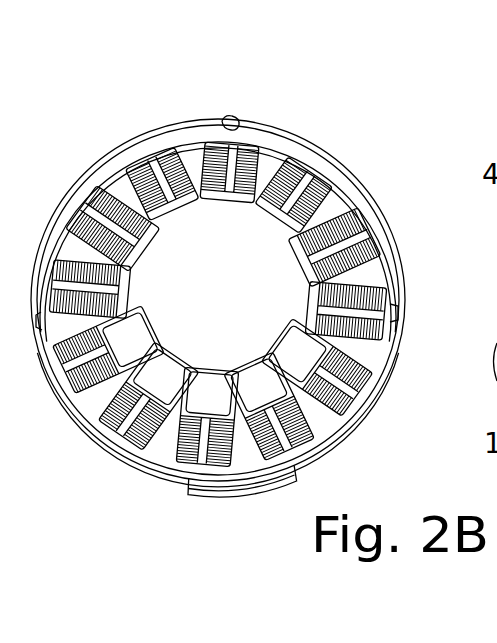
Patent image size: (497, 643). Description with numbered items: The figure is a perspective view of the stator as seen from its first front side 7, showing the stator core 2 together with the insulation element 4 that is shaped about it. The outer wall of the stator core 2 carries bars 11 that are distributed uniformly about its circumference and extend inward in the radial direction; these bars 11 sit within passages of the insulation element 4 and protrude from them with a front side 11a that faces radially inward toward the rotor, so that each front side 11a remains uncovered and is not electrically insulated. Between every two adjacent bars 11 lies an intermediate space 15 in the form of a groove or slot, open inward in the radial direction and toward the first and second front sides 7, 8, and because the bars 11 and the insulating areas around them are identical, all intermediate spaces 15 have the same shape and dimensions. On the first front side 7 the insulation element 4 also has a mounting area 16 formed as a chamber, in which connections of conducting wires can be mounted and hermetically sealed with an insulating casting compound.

The stator core 2 is at (312, 164).
The insulation element 4 is at (93, 398).
The first front side 7 is at (73, 152).
The second front side 8 is at (170, 248).
The bars 11 is at (217, 303).
The front side of the bar 11a is at (217, 303).
The intermediate space 15 is at (268, 156).
The mounting area 16 is at (229, 498).